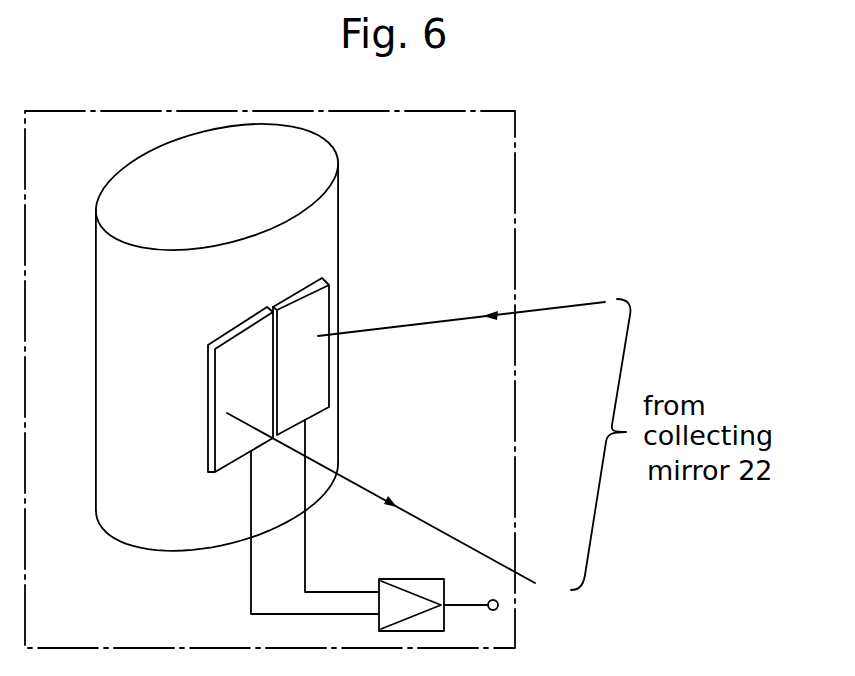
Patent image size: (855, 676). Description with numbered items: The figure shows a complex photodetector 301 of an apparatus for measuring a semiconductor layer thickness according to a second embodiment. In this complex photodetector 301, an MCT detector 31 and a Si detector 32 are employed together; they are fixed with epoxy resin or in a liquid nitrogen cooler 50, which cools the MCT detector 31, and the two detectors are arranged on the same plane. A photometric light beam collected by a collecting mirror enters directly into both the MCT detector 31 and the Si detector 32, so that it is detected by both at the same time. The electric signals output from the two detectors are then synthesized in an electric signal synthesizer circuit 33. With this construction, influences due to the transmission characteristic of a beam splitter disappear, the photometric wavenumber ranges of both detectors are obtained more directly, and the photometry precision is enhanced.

The complex photodetector 301 is at (515, 143).
The liquid nitrogen cooler 50 is at (336, 163).
The MCT detector 31 is at (318, 312).
The Si detector 32 is at (228, 388).
The electric signal synthesizer circuit 33 is at (410, 584).